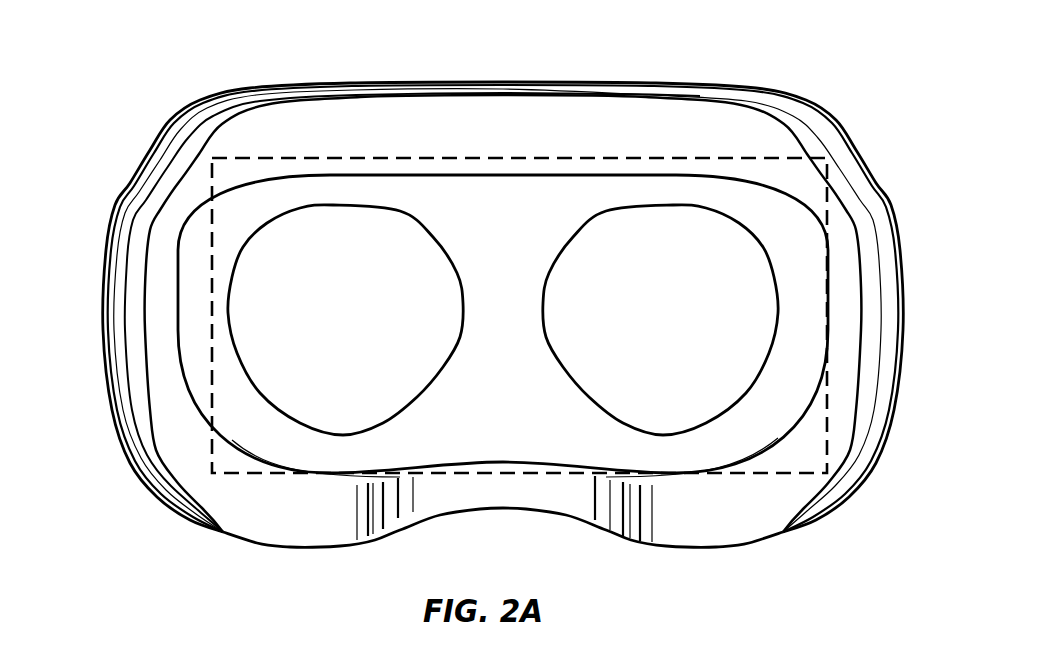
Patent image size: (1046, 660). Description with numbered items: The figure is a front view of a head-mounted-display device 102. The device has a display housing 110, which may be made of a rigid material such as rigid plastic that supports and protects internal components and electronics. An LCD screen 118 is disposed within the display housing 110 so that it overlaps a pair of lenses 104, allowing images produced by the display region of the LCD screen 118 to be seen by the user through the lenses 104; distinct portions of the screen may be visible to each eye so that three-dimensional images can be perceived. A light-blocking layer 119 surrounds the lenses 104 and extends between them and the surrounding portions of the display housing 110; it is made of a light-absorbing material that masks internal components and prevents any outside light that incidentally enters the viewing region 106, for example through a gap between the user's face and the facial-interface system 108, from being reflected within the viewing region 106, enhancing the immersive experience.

The head-mounted-display device 102 is at (102, 71).
The lenses 104 is at (230, 305).
The viewing region 106 is at (190, 362).
The facial-interface system 108 is at (291, 551).
The display housing 110 is at (131, 184).
The LCD screen 118 is at (650, 157).
The light-blocking layer 119 is at (506, 206).